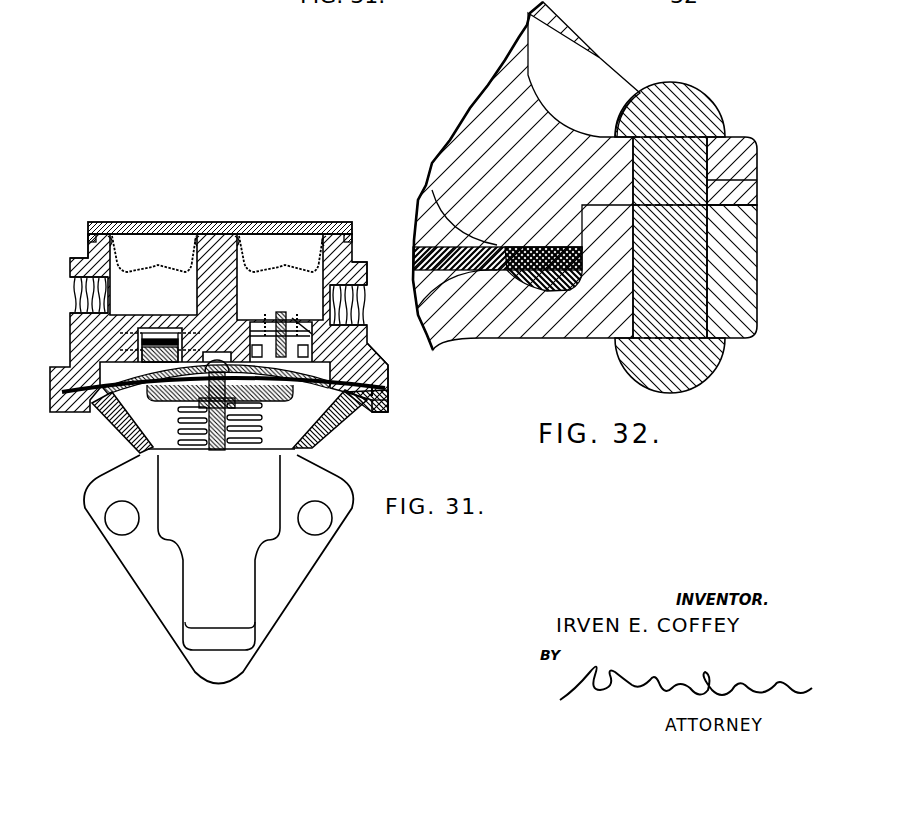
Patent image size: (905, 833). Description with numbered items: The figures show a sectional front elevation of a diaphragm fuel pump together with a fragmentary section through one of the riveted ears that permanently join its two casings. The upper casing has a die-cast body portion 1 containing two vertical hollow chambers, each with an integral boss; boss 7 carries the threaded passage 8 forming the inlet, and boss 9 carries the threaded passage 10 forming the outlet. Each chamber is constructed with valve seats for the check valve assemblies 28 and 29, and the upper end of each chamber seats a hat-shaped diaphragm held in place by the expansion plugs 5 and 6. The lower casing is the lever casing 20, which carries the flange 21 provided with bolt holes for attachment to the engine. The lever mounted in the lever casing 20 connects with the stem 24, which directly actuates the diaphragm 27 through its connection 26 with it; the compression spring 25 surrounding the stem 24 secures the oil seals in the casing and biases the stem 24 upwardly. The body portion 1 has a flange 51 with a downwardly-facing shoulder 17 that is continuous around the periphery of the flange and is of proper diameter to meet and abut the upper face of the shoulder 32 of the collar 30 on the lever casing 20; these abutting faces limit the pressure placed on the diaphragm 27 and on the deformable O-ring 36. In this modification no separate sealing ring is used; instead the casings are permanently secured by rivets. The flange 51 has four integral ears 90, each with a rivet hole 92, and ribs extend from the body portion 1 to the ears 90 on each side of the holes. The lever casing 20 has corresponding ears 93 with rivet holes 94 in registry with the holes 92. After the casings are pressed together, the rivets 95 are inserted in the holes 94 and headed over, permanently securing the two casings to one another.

In FIG. 31, the body portion 1 is at (348, 246).
In FIG. 31, the expansion plug 5 is at (285, 231).
In FIG. 31, the expansion plug 6 is at (164, 226).
In FIG. 31, the boss 7 is at (85, 256).
In FIG. 31, the threaded passage 8 is at (70, 293).
In FIG. 31, the boss 9 is at (363, 263).
In FIG. 31, the threaded passage 10 is at (365, 307).
In FIG. 31, the downwardly-facing shoulder 17 is at (385, 373).
In FIG. 31, the lever casing 20 is at (313, 445).
In FIG. 32, the lever casing 20 is at (478, 330).
In FIG. 31, the flange 21 is at (312, 572).
In FIG. 31, the stem 24 is at (225, 433).
In FIG. 31, the compression spring 25 is at (258, 412).
In FIG. 31, the connection 26 is at (156, 402).
In FIG. 31, the diaphragm 27 is at (107, 398).
In FIG. 31, the valve assembly 28 is at (160, 333).
In FIG. 31, the valve assembly 29 is at (283, 297).
In FIG. 31, the collar 30 is at (385, 407).
In FIG. 31, the shoulder 32 is at (387, 387).
In FIG. 31, the deformable O-ring 36 is at (375, 400).
In FIG. 31, the flange 51 is at (370, 363).
In FIG. 32, the ears 90 is at (758, 165).
In FIG. 32, the rivet holes 92 is at (708, 181).
In FIG. 32, the ears 93 is at (758, 297).
In FIG. 32, the rivet holes 94 is at (708, 244).
In FIG. 32, the rivets 95 is at (707, 372).